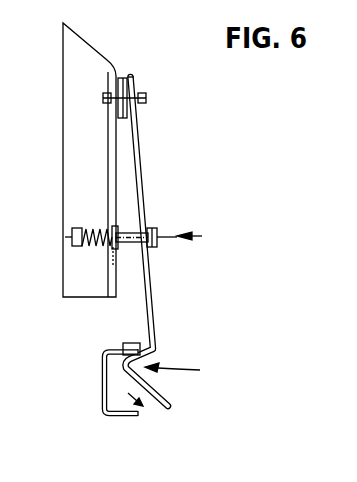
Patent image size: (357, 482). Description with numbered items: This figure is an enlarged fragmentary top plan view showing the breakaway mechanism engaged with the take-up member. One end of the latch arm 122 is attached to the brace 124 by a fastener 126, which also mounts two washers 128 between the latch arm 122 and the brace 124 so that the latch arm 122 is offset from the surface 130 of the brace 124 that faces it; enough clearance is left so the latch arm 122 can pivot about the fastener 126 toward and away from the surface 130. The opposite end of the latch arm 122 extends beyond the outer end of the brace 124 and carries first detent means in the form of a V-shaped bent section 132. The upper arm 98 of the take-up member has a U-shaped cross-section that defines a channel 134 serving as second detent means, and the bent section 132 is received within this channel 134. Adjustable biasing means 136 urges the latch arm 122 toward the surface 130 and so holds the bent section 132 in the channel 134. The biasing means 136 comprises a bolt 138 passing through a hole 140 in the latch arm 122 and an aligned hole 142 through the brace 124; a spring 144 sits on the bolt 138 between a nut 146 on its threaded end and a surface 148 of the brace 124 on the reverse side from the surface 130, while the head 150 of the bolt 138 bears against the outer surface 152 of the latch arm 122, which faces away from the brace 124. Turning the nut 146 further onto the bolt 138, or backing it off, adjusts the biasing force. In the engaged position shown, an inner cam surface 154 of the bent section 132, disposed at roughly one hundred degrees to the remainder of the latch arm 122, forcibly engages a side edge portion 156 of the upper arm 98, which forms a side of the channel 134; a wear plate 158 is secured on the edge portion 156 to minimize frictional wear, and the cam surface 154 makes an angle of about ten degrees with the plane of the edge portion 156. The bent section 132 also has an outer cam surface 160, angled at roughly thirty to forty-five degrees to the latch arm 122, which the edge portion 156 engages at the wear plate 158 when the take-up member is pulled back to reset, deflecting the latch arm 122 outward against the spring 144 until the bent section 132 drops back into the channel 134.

The upper arm 98 is at (104, 380).
The latch arm 122 is at (146, 192).
The brace 124 is at (90, 55).
The fastener 126 is at (141, 93).
The washers 128 is at (127, 123).
The surface 130 is at (126, 180).
The V-shaped bent section 132 is at (190, 365).
The channel 134 is at (145, 407).
The adjustable biasing means 136 is at (156, 235).
The bolt 138 is at (129, 247).
The hole 140 is at (149, 228).
The hole 142 is at (111, 258).
The spring 144 is at (92, 228).
The nut 146 is at (80, 243).
The surface 148 is at (109, 143).
The head 150 is at (158, 248).
The outer surface 152 is at (150, 283).
The inner cam surface 154 is at (150, 342).
The side edge portion 156 is at (128, 354).
The wear plate 158 is at (137, 343).
The outer cam surface 160 is at (168, 408).